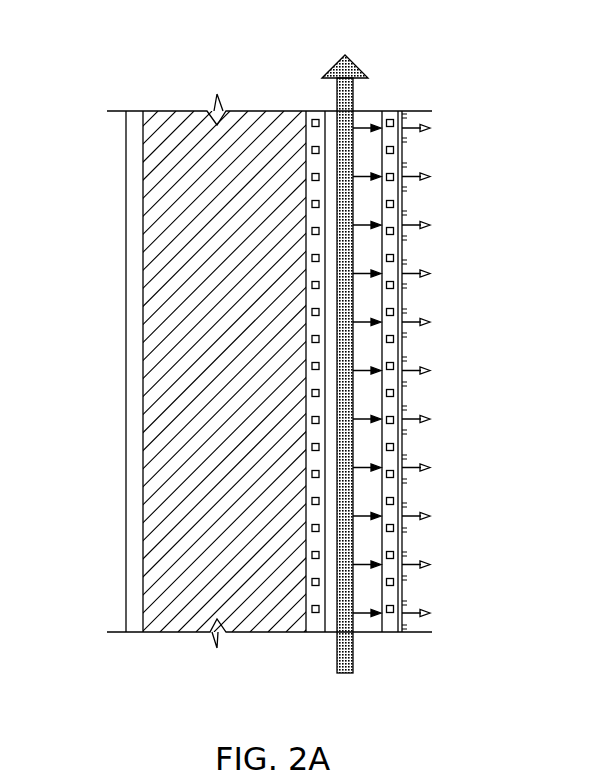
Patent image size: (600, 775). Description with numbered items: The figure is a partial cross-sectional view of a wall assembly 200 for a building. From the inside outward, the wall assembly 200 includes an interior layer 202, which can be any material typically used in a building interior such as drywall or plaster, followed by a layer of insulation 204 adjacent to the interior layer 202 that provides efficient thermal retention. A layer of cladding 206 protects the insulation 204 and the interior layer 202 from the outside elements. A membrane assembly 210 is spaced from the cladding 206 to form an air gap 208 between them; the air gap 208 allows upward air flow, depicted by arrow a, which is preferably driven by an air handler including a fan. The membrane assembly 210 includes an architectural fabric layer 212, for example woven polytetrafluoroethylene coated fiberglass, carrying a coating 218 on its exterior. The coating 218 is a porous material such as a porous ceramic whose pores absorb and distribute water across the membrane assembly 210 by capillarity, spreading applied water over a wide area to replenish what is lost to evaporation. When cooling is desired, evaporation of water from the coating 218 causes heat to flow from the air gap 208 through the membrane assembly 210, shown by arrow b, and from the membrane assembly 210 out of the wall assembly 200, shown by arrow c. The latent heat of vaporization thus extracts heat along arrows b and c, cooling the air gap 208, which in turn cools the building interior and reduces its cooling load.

The wall assembly 200 is at (100, 461).
The interior layer 202 is at (126, 199).
The layer of insulation 204 is at (165, 110).
The layer of cladding 206 is at (308, 112).
The air gap 208 is at (380, 244).
The membrane assembly 210 is at (402, 198).
The architectural fabric layer 212 is at (385, 110).
The coating 218 is at (402, 157).
The arrow a is at (340, 673).
The arrow b is at (355, 617).
The arrow c is at (425, 620).